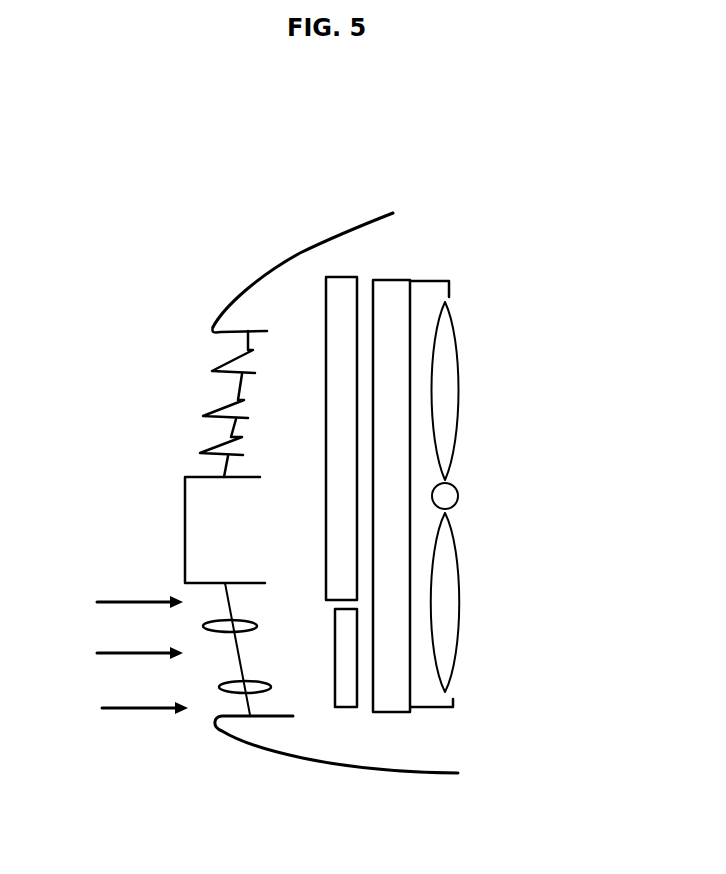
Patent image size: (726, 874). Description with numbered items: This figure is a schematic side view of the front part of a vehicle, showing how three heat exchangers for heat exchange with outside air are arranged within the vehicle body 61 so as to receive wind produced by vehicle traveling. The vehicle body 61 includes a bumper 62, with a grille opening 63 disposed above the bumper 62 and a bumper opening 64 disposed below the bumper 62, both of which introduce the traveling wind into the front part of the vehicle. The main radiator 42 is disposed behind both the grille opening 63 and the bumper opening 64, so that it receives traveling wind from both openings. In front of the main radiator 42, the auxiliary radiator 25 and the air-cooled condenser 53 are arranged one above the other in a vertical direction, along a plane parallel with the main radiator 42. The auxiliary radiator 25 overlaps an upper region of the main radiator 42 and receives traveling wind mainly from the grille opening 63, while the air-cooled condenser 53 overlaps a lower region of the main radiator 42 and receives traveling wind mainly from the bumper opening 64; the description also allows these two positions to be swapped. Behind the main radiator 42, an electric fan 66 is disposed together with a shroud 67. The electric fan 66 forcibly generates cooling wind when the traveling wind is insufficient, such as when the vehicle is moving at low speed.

The auxiliary radiator 25 is at (342, 278).
The main radiator 42 is at (391, 293).
The air-cooled condenser 53 is at (342, 699).
The vehicle body 61 is at (300, 250).
The bumper 62 is at (185, 531).
The grille opening 63 is at (233, 383).
The bumper opening 64 is at (233, 658).
The electric fan 66 is at (443, 387).
The shroud 67 is at (438, 278).